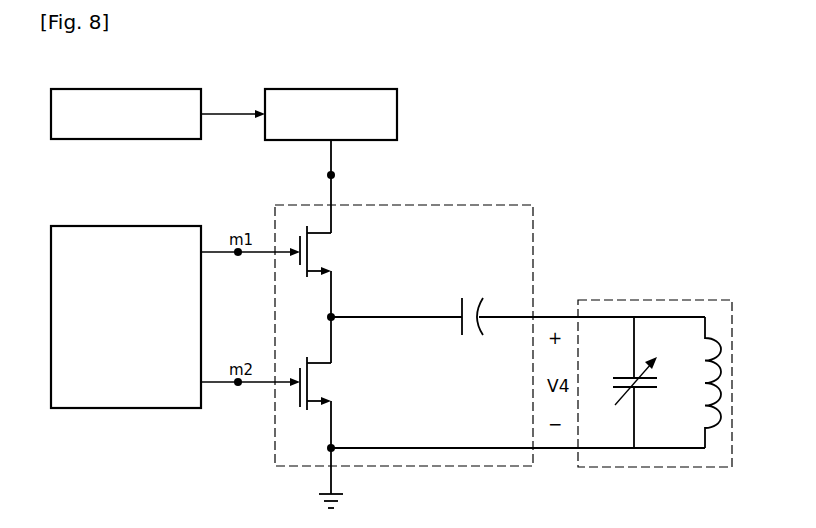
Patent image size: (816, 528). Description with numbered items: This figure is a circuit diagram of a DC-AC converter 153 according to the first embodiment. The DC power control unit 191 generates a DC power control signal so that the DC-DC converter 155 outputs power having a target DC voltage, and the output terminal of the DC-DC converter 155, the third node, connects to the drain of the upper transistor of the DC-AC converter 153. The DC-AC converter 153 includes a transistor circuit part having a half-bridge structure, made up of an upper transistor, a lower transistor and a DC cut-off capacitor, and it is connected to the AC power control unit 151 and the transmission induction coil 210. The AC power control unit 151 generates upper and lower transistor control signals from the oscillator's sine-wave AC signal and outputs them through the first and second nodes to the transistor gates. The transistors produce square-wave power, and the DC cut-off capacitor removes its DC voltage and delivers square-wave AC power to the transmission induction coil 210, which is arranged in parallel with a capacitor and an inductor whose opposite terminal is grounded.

The DC power control unit 191 is at (114, 89).
The DC-DC converter 155 is at (331, 89).
The AC power control unit 151 is at (115, 226).
The DC-AC converter 153 is at (471, 205).
The transmission induction coil 210 is at (671, 300).